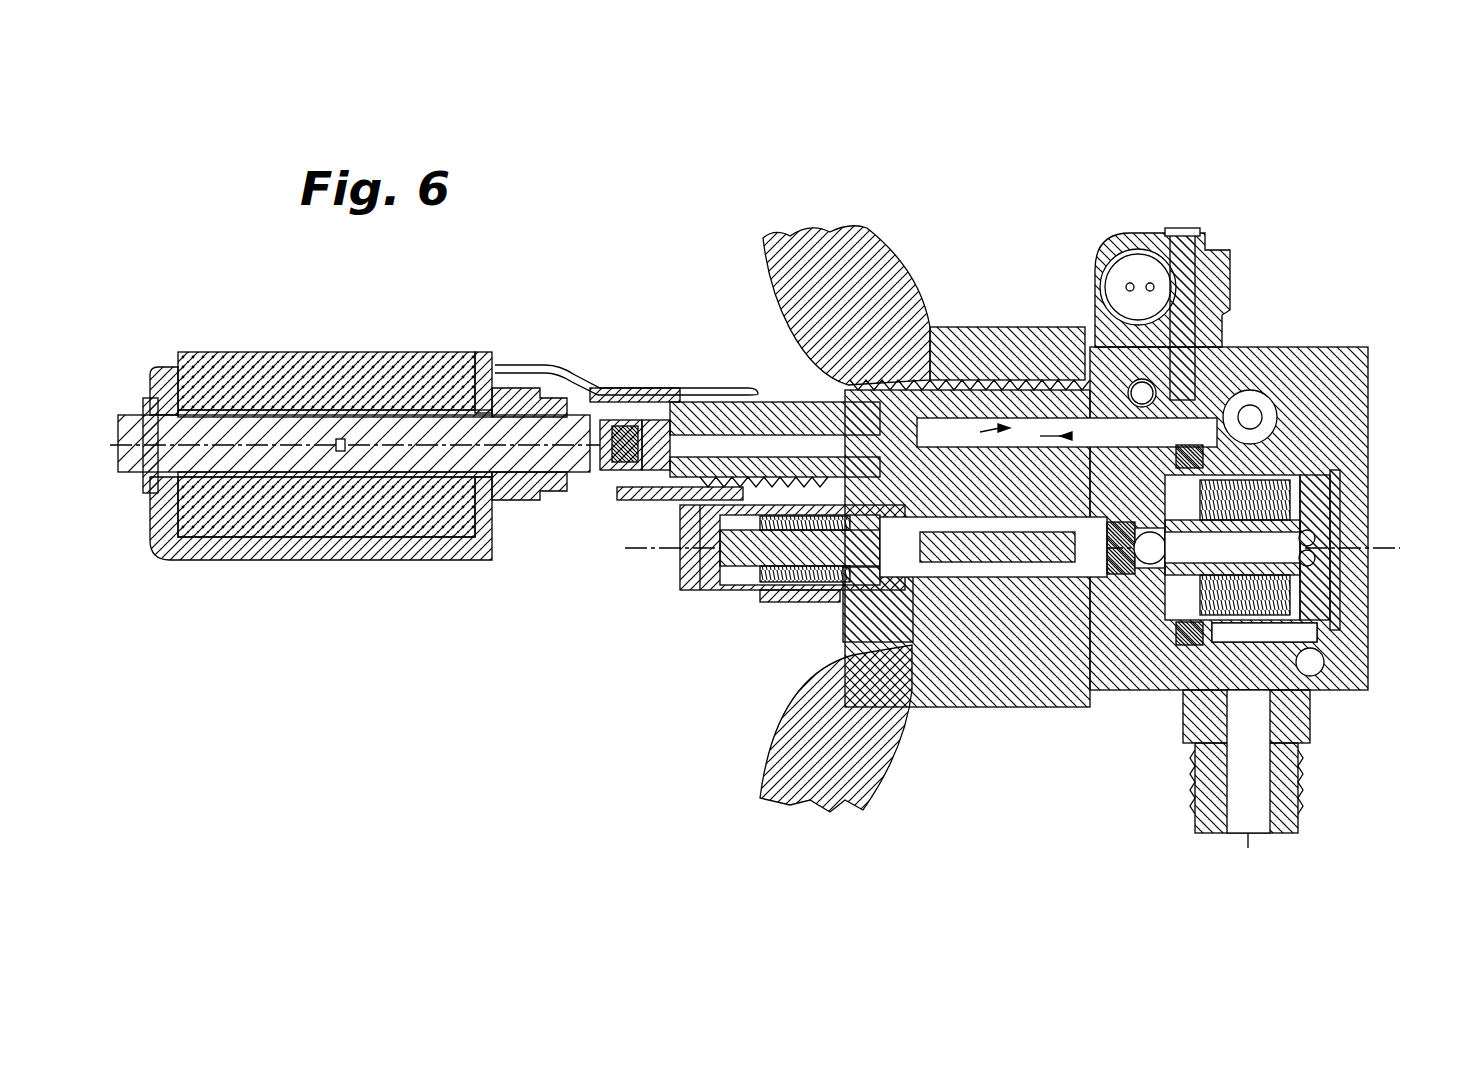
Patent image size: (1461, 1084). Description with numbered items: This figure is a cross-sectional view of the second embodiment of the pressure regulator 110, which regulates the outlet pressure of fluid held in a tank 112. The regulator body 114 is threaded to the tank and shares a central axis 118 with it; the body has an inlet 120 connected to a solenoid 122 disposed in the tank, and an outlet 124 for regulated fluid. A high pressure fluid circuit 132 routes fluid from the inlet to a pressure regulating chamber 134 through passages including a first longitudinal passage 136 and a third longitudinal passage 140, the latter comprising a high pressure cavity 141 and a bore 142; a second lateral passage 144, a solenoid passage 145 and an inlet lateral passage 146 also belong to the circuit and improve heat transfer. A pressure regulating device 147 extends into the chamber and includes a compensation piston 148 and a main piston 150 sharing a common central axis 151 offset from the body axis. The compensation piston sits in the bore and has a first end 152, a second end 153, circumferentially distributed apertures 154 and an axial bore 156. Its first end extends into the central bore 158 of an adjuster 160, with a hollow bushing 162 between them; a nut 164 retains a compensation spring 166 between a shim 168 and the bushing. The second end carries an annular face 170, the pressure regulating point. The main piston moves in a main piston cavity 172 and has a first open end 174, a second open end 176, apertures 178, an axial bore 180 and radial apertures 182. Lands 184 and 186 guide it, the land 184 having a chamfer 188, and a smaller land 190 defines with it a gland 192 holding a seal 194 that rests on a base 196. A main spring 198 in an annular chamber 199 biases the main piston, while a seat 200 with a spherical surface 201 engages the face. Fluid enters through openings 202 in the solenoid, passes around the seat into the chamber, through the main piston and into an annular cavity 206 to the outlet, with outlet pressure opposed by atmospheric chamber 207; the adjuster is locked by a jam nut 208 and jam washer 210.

The pressure regulator 110 is at (1340, 185).
The tank 112 is at (830, 235).
The body 114 is at (1370, 385).
The central axis 118 is at (1362, 520).
The inlet 120 is at (830, 400).
The solenoid 122 is at (517, 380).
The outlet 124 is at (1277, 692).
The high pressure fluid circuit 132 is at (975, 420).
The pressure regulating chamber 134 is at (1005, 590).
The first longitudinal passage 136 is at (1060, 450).
The third longitudinal passage 140 is at (915, 400).
The high pressure cavity 141 is at (965, 600).
The bore 142 is at (990, 590).
The second lateral passage 144 is at (845, 380).
The solenoid passage 145 is at (648, 398).
The inlet lateral passage 146 is at (870, 355).
The pressure regulating device 147 is at (1020, 450).
The compensation piston 148 is at (858, 388).
The main piston 150 is at (1080, 470).
The central axis 151 is at (1360, 545).
The first end 152 is at (690, 543).
The second end 153 is at (1030, 600).
The apertures 154 is at (908, 600).
The axial bore 156 is at (960, 430).
The central bore 158 is at (695, 565).
The adjuster 160 is at (685, 587).
The hollow bushing 162 is at (748, 402).
The nut 164 is at (735, 600).
The compensation spring 166 is at (712, 400).
The shim 168 is at (685, 398).
The annular face 170 is at (1058, 590).
The main piston cavity 172 is at (1300, 450).
The first open end 174 is at (1305, 540).
The second open end 176 is at (1100, 600).
The apertures 178 is at (1040, 480).
The axial bore 180 is at (1290, 555).
The radially extending apertures 182 is at (1310, 618).
The land 184 is at (1110, 380).
The land 186 is at (1335, 455).
The chamfer 188 is at (1188, 650).
The land 190 is at (1252, 417).
The gland 192 is at (1200, 455).
The seal 194 is at (1190, 445).
The base 196 is at (1207, 683).
The main spring 198 is at (1338, 425).
The annular chamber 199 is at (1305, 490).
The seat 200 is at (1000, 470).
The spherical surface 201 is at (1110, 560).
The openings 202 is at (615, 450).
The annular cavity 206 is at (1335, 660).
The chamber 207 is at (1170, 630).
The jam nut 208 is at (770, 602).
The jam washer 210 is at (845, 628).